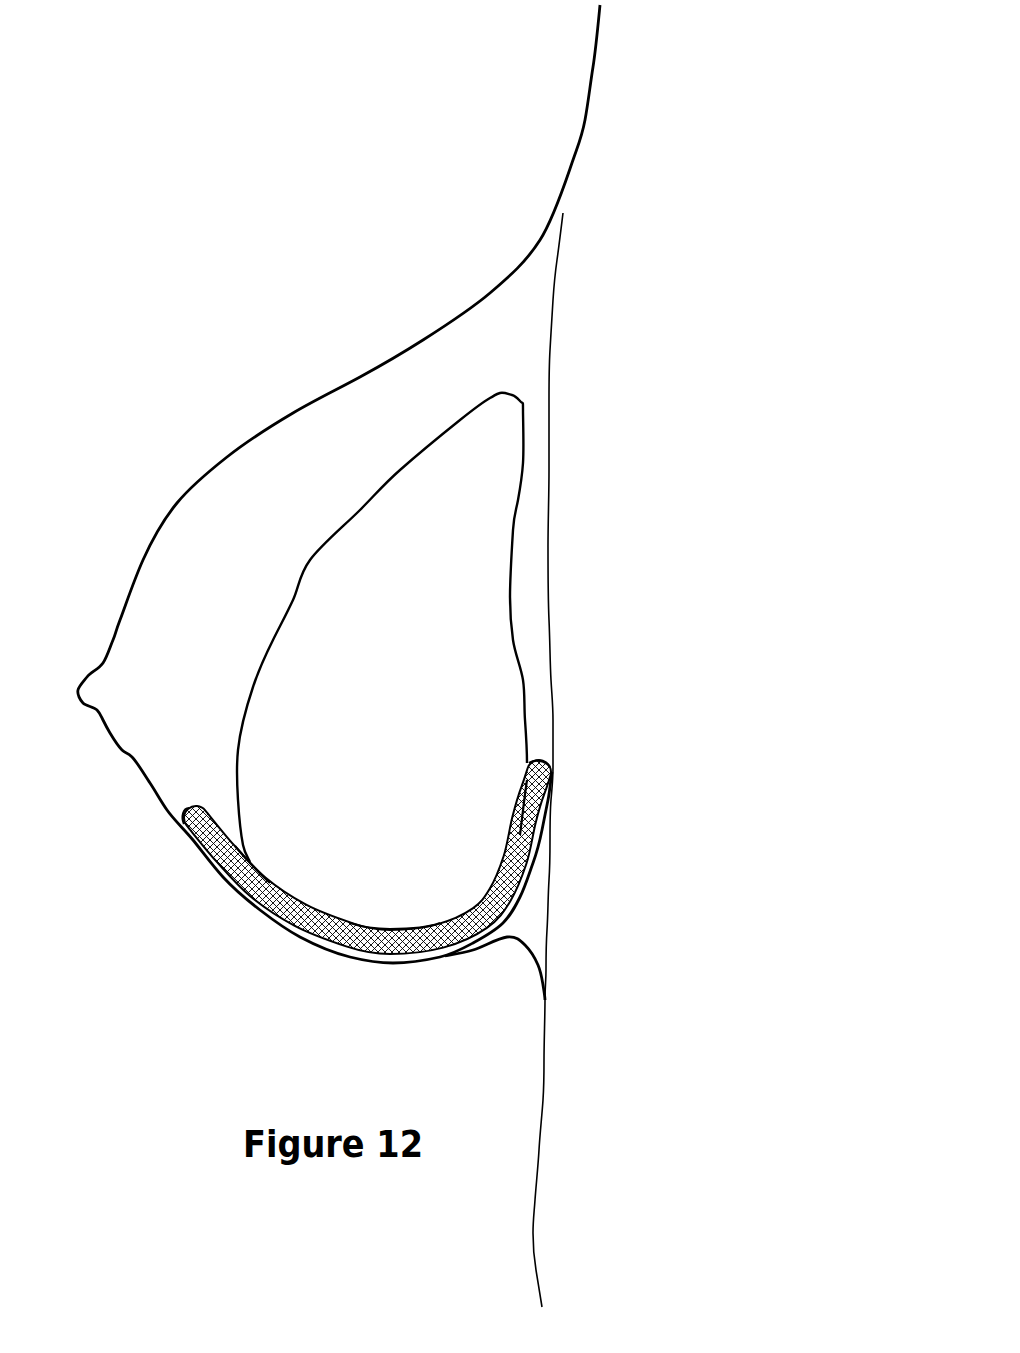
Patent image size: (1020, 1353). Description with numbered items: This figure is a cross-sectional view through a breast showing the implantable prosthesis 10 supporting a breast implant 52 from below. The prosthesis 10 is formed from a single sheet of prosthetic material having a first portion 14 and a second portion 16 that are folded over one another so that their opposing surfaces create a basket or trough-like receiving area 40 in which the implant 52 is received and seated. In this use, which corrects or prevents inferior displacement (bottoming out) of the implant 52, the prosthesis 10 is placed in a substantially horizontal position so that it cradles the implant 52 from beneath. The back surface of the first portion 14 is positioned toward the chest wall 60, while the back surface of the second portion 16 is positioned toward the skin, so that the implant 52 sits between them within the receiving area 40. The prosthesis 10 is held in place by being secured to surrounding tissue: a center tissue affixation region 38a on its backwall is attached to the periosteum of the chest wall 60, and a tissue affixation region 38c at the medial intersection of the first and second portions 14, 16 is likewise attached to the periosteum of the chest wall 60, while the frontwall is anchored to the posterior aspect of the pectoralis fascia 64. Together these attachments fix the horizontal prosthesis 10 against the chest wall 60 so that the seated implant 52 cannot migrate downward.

The implantable prosthesis 10 is at (353, 962).
The first portion 14 is at (533, 813).
The second portion 16 is at (265, 897).
The center tissue affixation region 38a is at (540, 763).
The tissue affixation region 38c is at (190, 810).
The receiving area 40 is at (403, 925).
The implant 52 is at (392, 658).
The chest wall 60 is at (533, 638).
The pectoralis fascia 64 is at (185, 730).